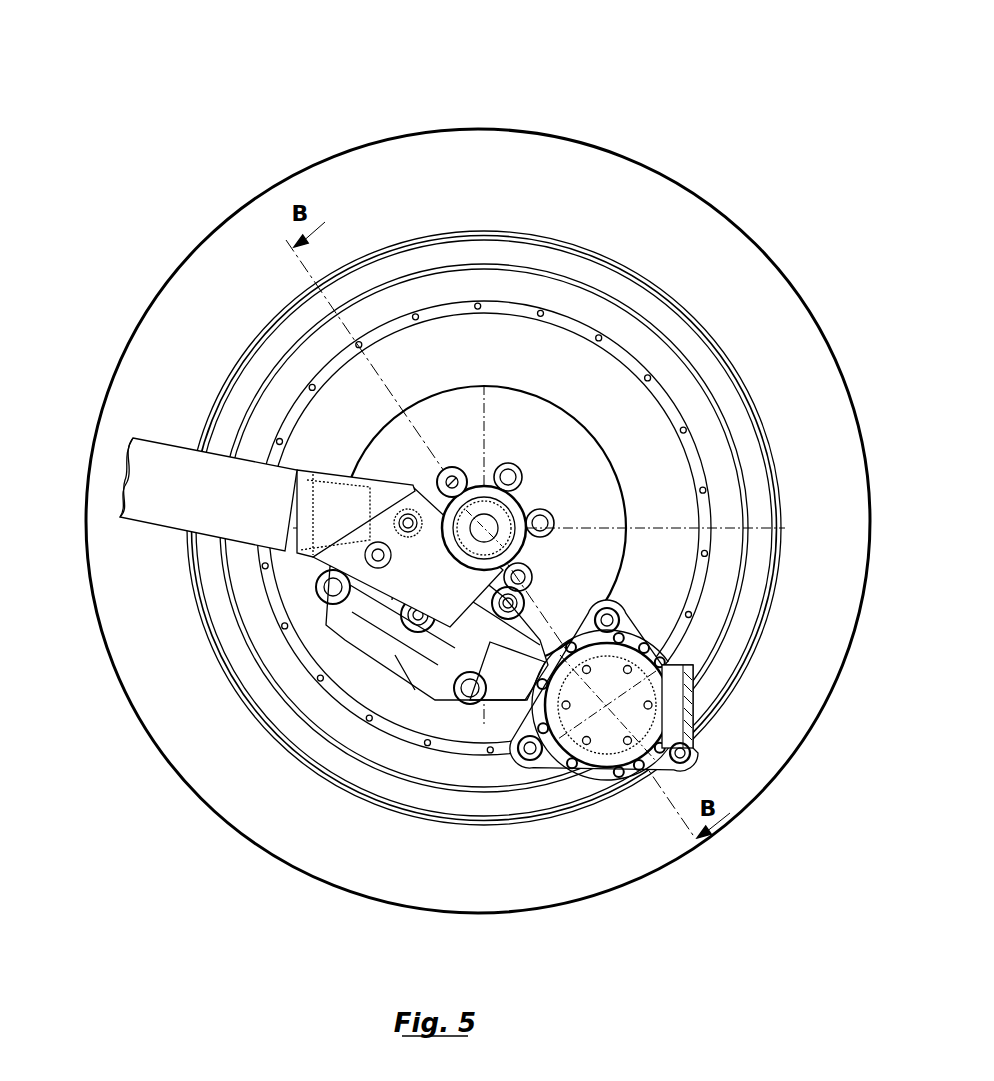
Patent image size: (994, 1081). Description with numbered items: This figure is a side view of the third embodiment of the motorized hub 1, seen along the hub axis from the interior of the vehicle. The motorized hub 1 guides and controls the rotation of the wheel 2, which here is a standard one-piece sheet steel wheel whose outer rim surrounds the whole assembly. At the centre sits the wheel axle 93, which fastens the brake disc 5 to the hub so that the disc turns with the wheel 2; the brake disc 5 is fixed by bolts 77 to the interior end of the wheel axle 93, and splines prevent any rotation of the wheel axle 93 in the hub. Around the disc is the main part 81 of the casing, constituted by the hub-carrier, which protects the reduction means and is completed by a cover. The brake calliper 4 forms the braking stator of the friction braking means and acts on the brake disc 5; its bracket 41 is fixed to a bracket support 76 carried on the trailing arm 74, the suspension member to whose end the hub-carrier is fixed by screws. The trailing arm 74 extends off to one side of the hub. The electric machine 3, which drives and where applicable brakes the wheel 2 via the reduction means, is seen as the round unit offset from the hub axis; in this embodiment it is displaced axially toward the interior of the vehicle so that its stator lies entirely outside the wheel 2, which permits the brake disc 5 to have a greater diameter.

The motorized hub 1 is at (298, 107).
The wheel 2 is at (543, 260).
The electric machine 3 is at (610, 735).
The brake calliper 4 is at (432, 660).
The brake disc 5 is at (552, 443).
The bracket 41 is at (505, 655).
The trailing arm 74 is at (338, 500).
The bracket support 76 is at (450, 560).
The bolts 77 is at (438, 478).
The main part of the casing 81 is at (445, 350).
The wheel axle 93 is at (498, 515).